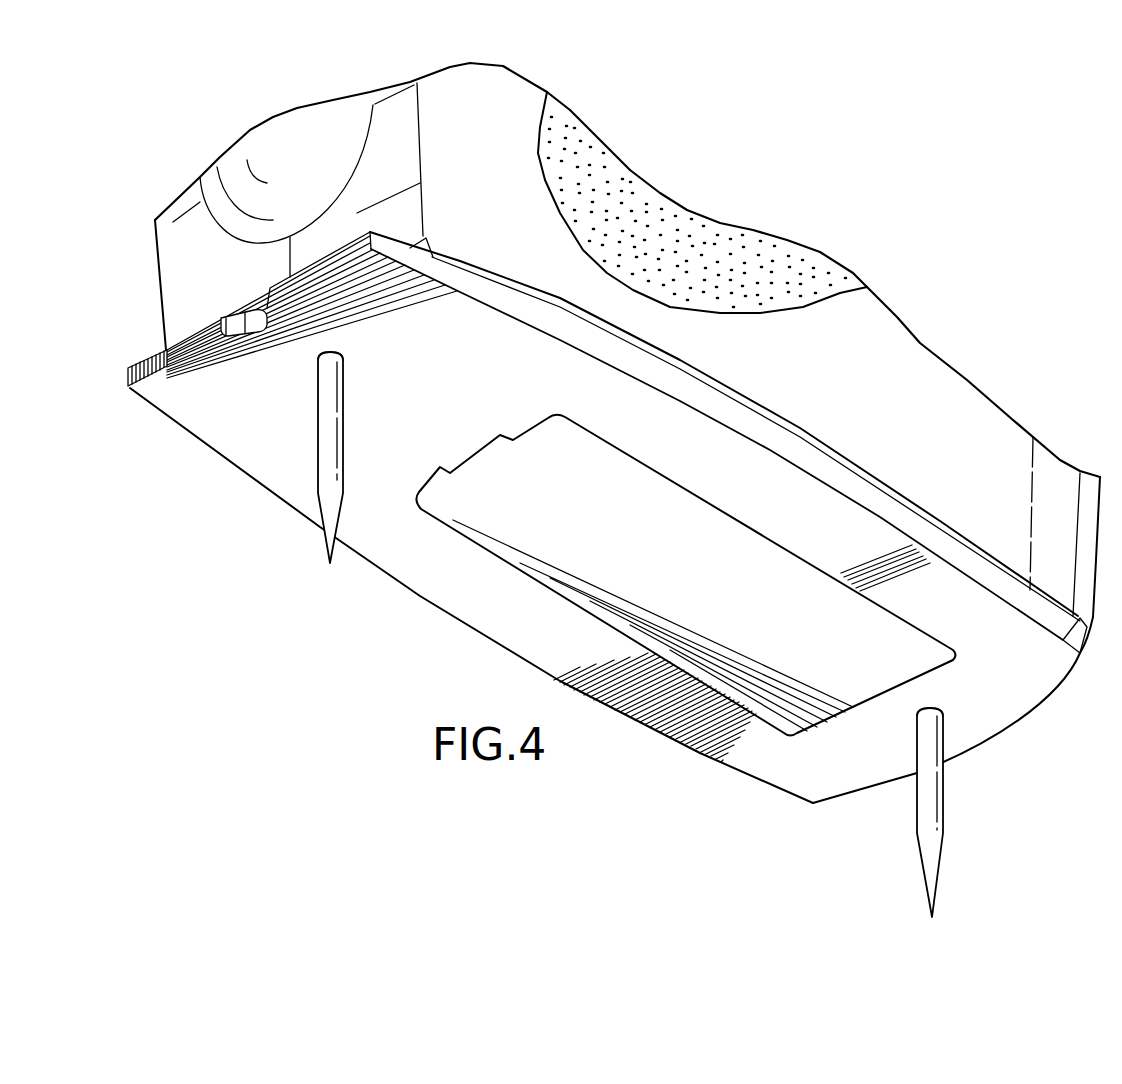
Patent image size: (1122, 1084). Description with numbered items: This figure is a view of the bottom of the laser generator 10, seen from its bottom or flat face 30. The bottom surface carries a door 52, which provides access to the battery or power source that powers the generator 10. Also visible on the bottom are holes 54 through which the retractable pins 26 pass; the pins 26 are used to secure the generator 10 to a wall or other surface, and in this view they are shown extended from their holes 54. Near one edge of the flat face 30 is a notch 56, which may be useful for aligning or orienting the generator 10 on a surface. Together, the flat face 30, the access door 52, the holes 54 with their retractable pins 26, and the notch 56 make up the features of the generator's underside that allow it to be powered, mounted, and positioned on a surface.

The generator 10 is at (1008, 243).
The retractable pins 26 is at (343, 410).
The flat face 30 is at (143, 360).
The door 52 is at (727, 552).
The holes 54 is at (317, 358).
The notch 56 is at (260, 305).